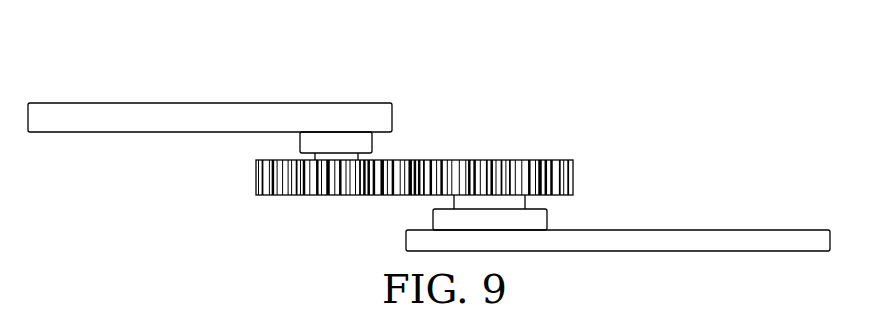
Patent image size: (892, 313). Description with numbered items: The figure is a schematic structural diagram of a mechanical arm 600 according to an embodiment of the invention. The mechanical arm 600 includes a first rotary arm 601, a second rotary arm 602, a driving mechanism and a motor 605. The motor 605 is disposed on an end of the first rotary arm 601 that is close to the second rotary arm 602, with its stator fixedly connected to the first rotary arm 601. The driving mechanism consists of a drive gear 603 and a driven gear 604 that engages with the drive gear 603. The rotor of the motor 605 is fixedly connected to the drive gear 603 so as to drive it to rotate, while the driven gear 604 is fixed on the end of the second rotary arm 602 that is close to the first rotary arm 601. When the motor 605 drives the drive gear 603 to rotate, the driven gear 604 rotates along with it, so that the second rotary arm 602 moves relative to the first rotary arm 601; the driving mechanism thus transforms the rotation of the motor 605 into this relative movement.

The mechanical arm 600 is at (444, 140).
The first rotary arm 601 is at (226, 117).
The second rotary arm 602 is at (736, 243).
The drive gear 603 is at (290, 182).
The driven gear 604 is at (530, 172).
The motor 605 is at (345, 147).